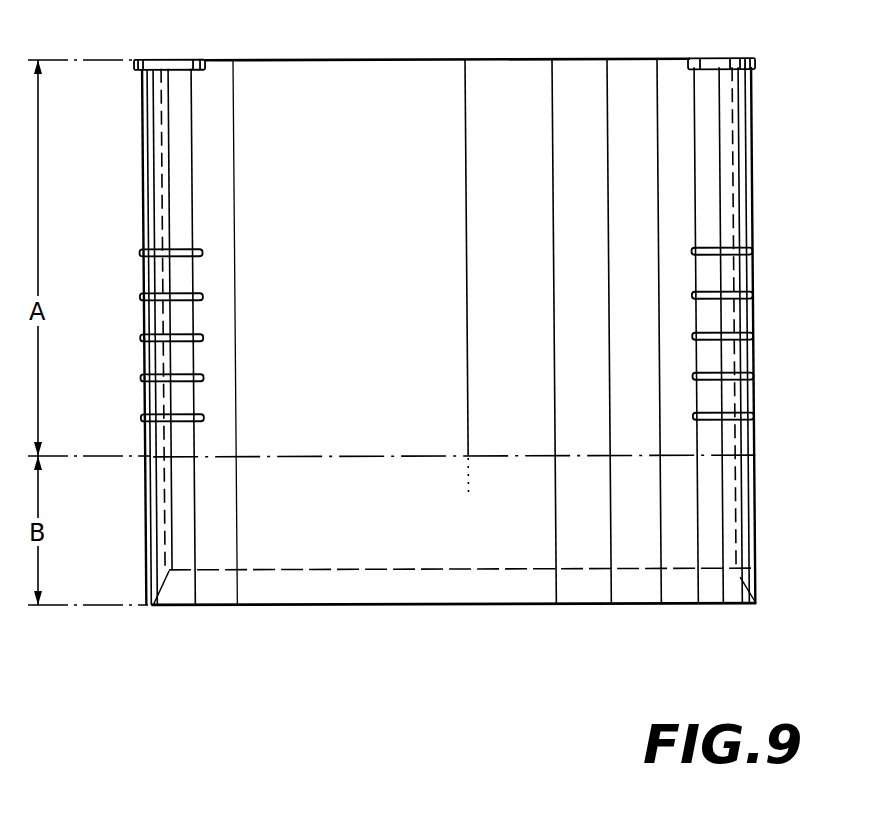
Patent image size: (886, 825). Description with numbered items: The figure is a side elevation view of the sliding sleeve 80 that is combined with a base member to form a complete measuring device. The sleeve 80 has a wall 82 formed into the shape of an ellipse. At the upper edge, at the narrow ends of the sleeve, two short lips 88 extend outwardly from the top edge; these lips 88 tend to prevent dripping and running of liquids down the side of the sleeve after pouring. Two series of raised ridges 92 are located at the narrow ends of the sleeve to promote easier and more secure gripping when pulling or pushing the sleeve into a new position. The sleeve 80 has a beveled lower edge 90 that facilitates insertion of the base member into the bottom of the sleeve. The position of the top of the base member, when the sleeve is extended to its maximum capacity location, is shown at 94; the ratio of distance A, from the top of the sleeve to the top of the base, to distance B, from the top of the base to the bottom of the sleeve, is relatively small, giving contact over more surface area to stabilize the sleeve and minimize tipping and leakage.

The sleeve 80 is at (838, 87).
The wall 82 is at (752, 217).
The lips 88 is at (155, 57).
The beveled lower edge 90 is at (711, 596).
The raised ridges 92 is at (133, 233).
The top of the base member position 94 is at (377, 460).